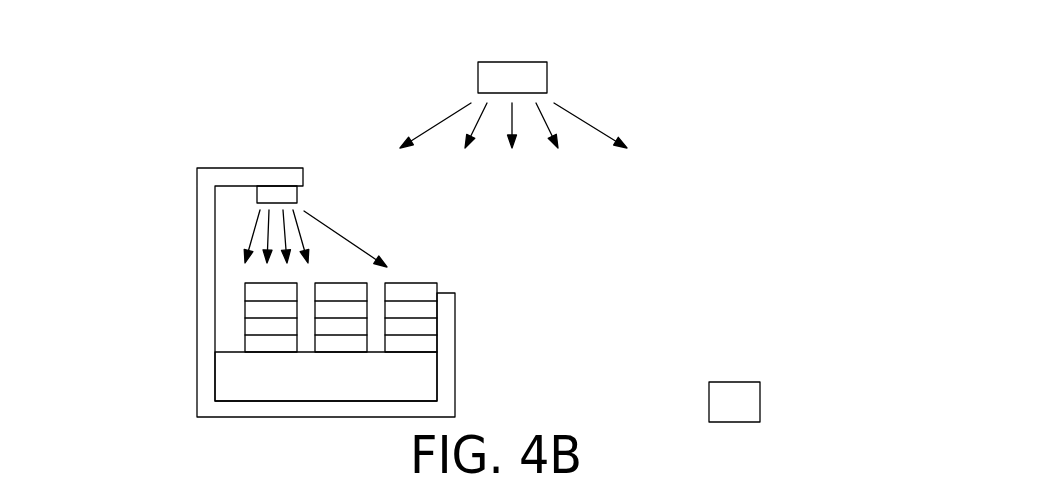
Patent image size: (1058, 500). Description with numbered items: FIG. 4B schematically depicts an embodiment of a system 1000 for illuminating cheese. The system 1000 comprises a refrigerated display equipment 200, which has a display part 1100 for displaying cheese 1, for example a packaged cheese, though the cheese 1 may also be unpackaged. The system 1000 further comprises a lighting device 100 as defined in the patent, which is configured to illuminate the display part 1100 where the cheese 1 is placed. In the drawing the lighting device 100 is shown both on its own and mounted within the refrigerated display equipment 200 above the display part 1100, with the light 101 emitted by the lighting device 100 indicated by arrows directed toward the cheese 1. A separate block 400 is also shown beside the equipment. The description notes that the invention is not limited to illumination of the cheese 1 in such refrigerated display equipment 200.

The lighting device 100 is at (318, 193).
The light 101 is at (373, 250).
The cheese 1 is at (352, 290).
The refrigerated display equipment 200 is at (174, 321).
The system 1000 is at (152, 264).
The display part 1100 is at (471, 227).
The control unit 400 is at (792, 386).